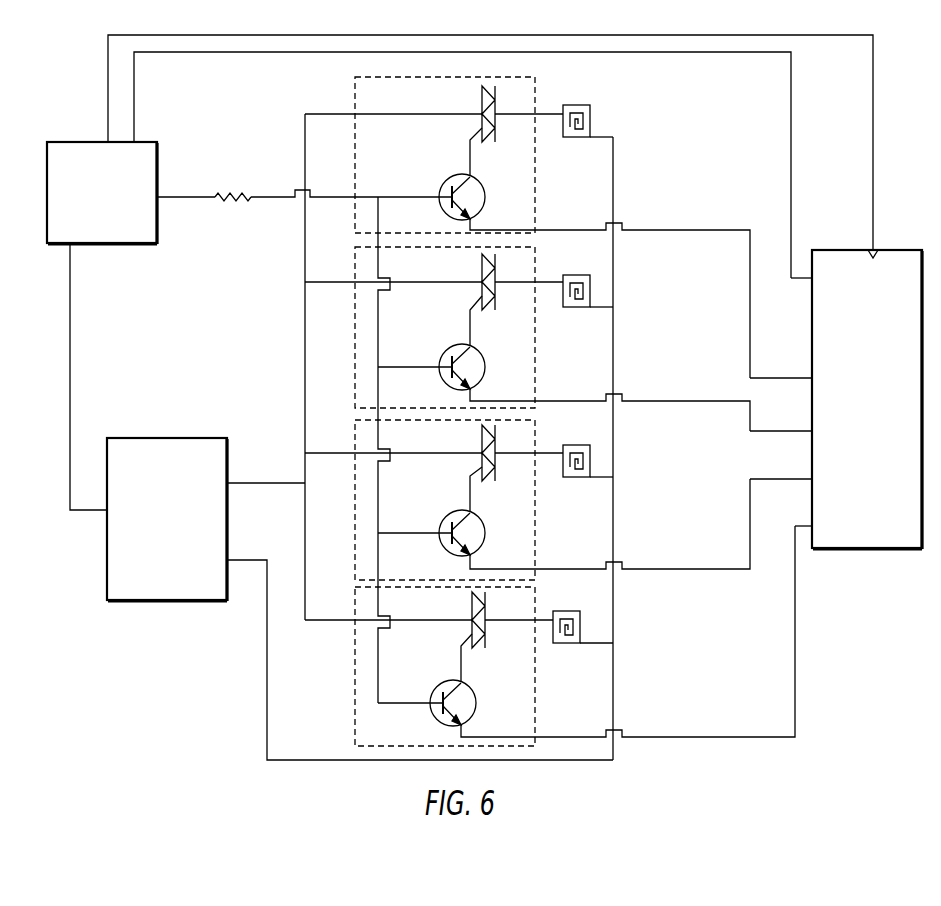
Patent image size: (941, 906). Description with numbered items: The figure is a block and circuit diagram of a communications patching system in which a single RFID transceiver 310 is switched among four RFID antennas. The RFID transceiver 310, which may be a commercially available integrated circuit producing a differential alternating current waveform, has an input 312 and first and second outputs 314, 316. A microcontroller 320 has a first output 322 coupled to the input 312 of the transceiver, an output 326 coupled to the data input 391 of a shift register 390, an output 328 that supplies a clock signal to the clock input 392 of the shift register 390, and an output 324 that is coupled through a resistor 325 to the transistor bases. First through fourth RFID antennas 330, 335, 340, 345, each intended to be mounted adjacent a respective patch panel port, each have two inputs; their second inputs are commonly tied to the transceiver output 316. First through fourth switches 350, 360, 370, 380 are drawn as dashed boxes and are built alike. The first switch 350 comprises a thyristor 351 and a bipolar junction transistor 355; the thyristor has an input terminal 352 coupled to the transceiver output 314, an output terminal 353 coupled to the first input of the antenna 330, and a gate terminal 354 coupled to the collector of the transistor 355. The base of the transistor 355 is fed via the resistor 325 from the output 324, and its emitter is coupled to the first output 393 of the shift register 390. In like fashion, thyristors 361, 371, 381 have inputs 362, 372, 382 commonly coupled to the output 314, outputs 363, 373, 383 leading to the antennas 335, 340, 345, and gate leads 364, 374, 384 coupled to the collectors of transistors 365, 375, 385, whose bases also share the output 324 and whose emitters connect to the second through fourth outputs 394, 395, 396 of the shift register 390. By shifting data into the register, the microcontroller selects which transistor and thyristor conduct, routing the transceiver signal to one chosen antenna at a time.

The RFID transceiver 310 is at (149, 580).
The input 312 is at (66, 545).
The first output 314 is at (237, 478).
The second output 316 is at (230, 595).
The controller 320 is at (82, 236).
The first output 322 is at (83, 273).
The output 324 is at (165, 188).
The resistor 325 is at (215, 236).
The output 326 is at (148, 128).
The output 328 is at (68, 128).
The first RFID antenna 330 is at (560, 165).
The second RFID antenna 335 is at (560, 335).
The third RFID antenna 340 is at (560, 503).
The fourth RFID antenna 345 is at (560, 673).
The first switch 350 is at (353, 127).
The thyristor 351 is at (499, 108).
The input terminal 352 is at (435, 108).
The output terminal 353 is at (500, 143).
The gate terminal 354 is at (429, 143).
The bipolar junction transistor 355 is at (491, 210).
The second switch 360 is at (355, 310).
The thyristor 361 is at (499, 278).
The input 362 is at (435, 278).
The output terminal 363 is at (500, 313).
The gate lead 364 is at (429, 313).
The bipolar junction transistor 365 is at (491, 380).
The third switch 370 is at (356, 490).
The thyristor 371 is at (499, 445).
The input 372 is at (435, 445).
The output terminal 373 is at (500, 481).
The gate lead 374 is at (429, 481).
The bipolar junction transistor 375 is at (491, 548).
The fourth switch 380 is at (357, 650).
The thyristor 381 is at (494, 615).
The input 382 is at (436, 615).
The output terminal 383 is at (490, 646).
The gate lead 384 is at (425, 646).
The bipolar junction transistor 385 is at (482, 716).
The shift register 390 is at (861, 381).
The input 391 is at (775, 313).
The input 392 is at (828, 243).
The first output 393 is at (775, 373).
The second output 394 is at (775, 425).
The third output 395 is at (775, 473).
The fourth output 396 is at (775, 520).